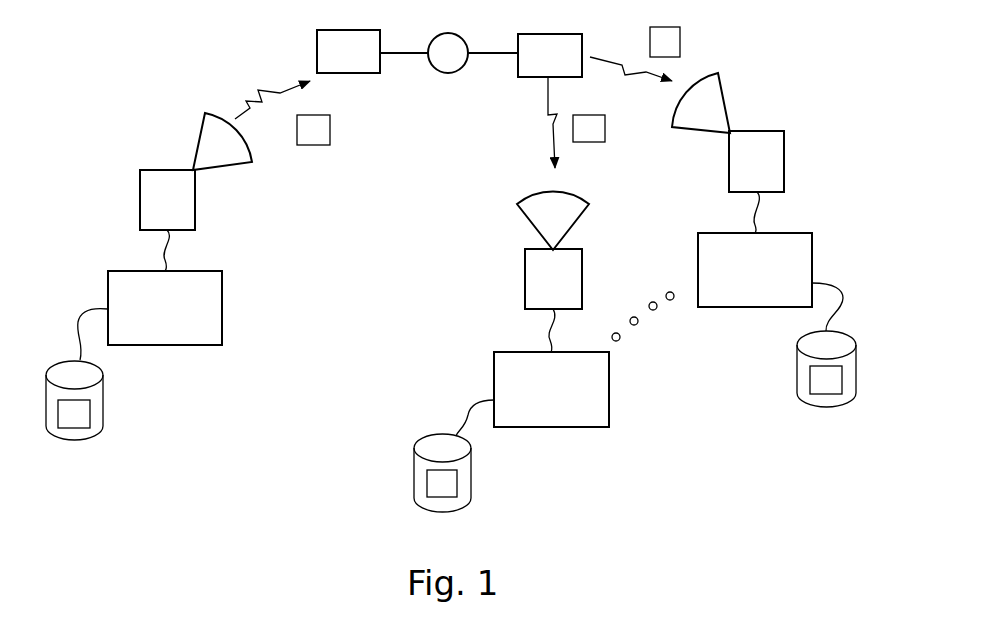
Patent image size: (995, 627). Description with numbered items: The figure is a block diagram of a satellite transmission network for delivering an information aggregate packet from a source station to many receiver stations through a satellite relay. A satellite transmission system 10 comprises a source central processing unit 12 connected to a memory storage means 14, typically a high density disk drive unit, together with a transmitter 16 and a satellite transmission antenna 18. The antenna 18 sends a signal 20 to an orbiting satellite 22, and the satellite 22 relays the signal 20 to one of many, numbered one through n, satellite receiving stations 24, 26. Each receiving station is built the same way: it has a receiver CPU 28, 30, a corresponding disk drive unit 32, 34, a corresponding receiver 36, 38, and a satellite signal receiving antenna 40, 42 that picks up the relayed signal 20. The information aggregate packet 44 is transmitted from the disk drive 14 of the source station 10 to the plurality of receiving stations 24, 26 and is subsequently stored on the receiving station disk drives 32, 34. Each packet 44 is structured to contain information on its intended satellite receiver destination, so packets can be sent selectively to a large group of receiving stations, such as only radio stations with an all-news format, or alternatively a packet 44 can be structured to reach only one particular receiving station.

The satellite transmission system 10 is at (86, 251).
The source central processing unit 12 is at (222, 310).
The memory storage means 14 is at (58, 360).
The transmitter 16 is at (157, 213).
The satellite transmission antenna 18 is at (213, 153).
The signal 20 is at (250, 108).
The orbiting satellite 22 is at (440, 68).
The satellite receiving station 24 is at (647, 412).
The satellite receiving station 26 is at (828, 219).
The receiver CPU 28 is at (495, 352).
The receiver CPU 30 is at (733, 307).
The disk drive unit 32 is at (416, 471).
The disk drive unit 34 is at (797, 393).
The receiver 36 is at (543, 293).
The receiver 38 is at (747, 173).
The satellite signal receiving antenna 40 is at (543, 225).
The satellite signal receiving antenna 42 is at (692, 117).
The information aggregate packet 44 is at (318, 145).